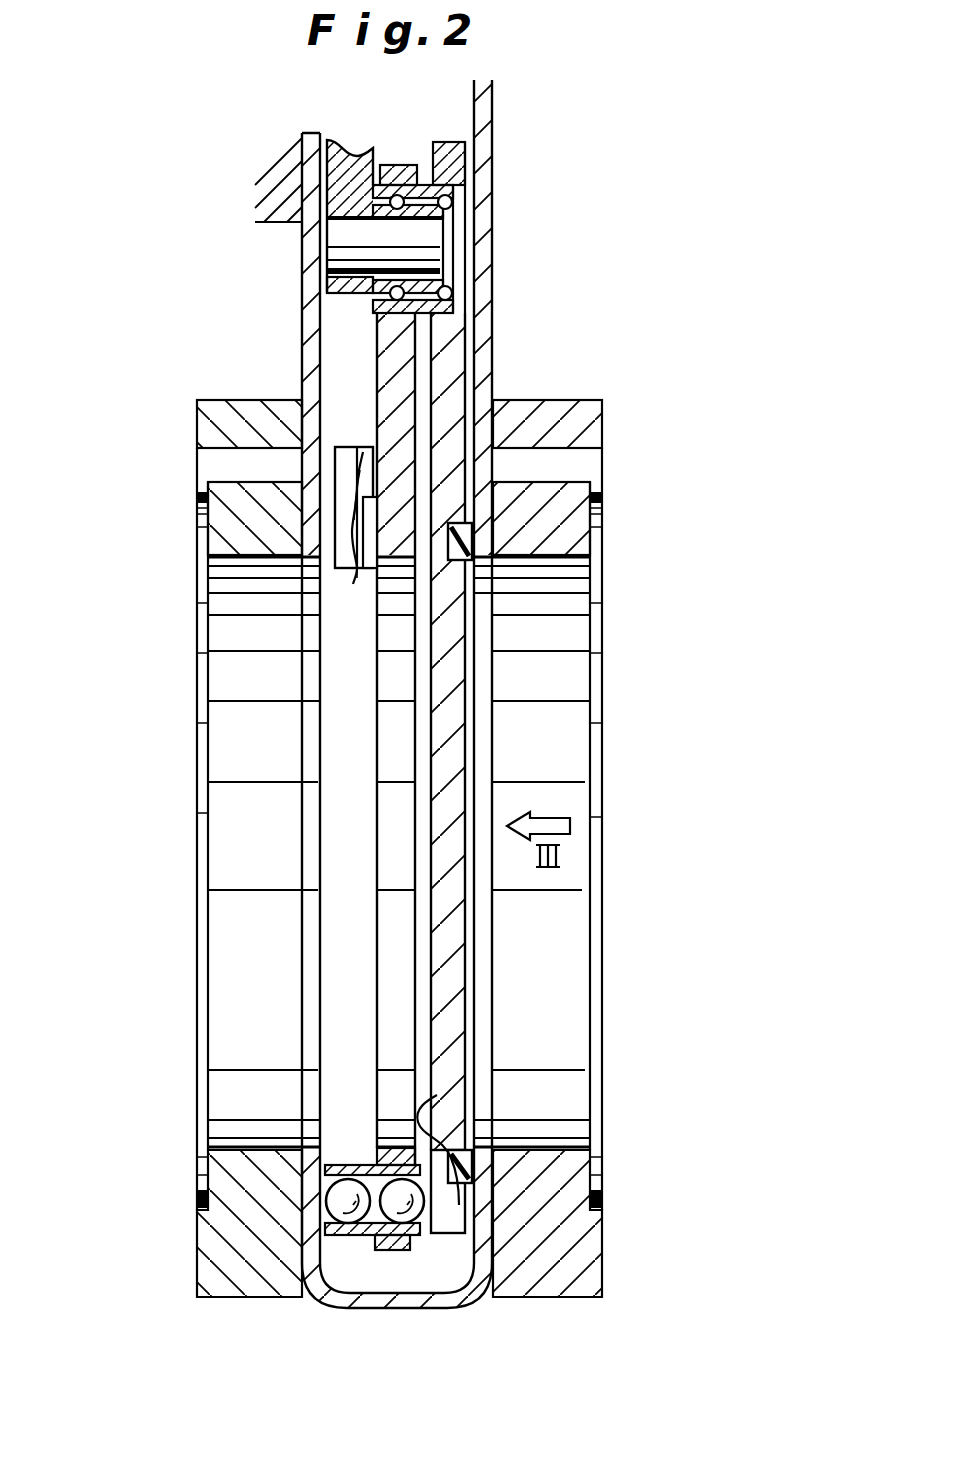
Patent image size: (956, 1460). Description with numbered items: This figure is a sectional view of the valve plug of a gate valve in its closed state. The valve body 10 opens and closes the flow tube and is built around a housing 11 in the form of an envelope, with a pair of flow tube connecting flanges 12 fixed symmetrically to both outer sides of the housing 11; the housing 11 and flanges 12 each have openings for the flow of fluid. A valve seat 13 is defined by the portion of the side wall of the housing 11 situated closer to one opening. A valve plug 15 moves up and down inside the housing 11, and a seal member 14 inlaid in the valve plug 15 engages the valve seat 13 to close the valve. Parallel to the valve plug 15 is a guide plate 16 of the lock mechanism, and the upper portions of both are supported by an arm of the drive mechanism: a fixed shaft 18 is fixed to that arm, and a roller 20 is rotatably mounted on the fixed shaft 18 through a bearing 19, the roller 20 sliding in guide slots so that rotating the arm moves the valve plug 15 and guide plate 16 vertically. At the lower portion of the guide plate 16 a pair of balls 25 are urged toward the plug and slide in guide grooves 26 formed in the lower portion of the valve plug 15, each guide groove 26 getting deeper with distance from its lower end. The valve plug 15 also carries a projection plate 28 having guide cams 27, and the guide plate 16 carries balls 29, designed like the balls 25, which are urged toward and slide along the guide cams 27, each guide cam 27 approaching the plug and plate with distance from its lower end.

The valve body 10 is at (147, 780).
The housing 11 is at (302, 280).
The flow tube connecting flanges 12 is at (216, 413).
The valve seat 13 is at (470, 558).
The seal member 14 is at (473, 538).
The valve plug 15 is at (465, 728).
The guide plate 16 is at (376, 843).
The fixed shaft 18 is at (421, 240).
The bearing 19 is at (451, 205).
The roller 20 is at (422, 175).
The balls 25 is at (403, 1214).
The guide grooves 26 is at (437, 1095).
The guide cams 27 is at (363, 452).
The projection plate 28 is at (344, 440).
The balls 29 is at (357, 578).